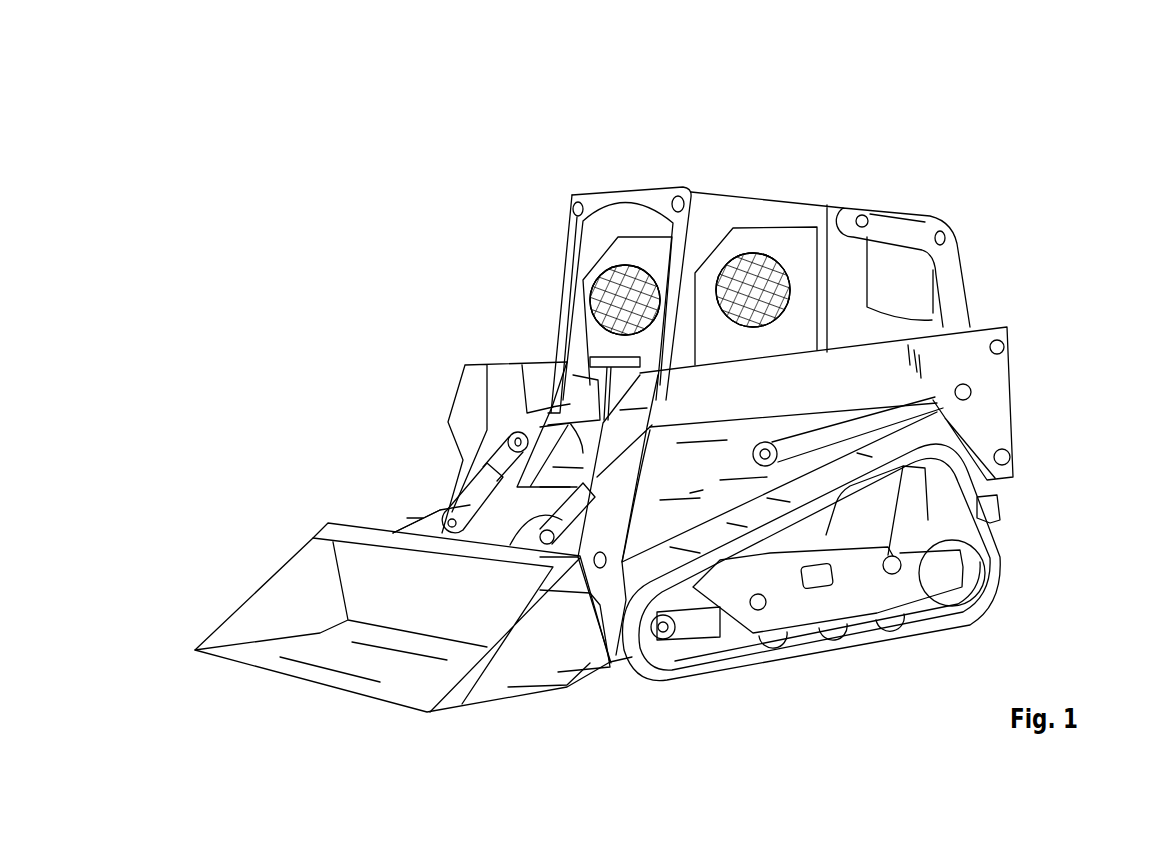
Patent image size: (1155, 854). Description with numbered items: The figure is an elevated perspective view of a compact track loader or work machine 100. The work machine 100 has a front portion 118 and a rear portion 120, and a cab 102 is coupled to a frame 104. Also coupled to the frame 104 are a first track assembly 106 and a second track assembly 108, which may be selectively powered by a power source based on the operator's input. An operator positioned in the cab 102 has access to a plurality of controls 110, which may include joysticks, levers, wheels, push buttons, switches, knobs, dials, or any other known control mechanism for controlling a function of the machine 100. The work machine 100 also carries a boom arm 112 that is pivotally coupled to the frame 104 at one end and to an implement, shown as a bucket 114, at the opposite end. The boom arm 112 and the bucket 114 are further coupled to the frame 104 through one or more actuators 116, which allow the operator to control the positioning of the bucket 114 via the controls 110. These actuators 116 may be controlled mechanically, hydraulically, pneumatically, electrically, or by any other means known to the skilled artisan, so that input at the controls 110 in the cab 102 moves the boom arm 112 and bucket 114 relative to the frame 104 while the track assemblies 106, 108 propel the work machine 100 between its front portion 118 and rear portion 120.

The work machine 100 is at (470, 160).
The cab 102 is at (769, 197).
The frame 104 is at (500, 511).
The first track assembly 106 is at (772, 678).
The second track assembly 108 is at (412, 511).
The plurality of controls 110 is at (592, 361).
The boom arm 112 is at (1000, 393).
The bucket 114 is at (313, 672).
The actuators 116 is at (500, 450).
The front portion 118 is at (261, 514).
The rear portion 120 is at (1038, 512).